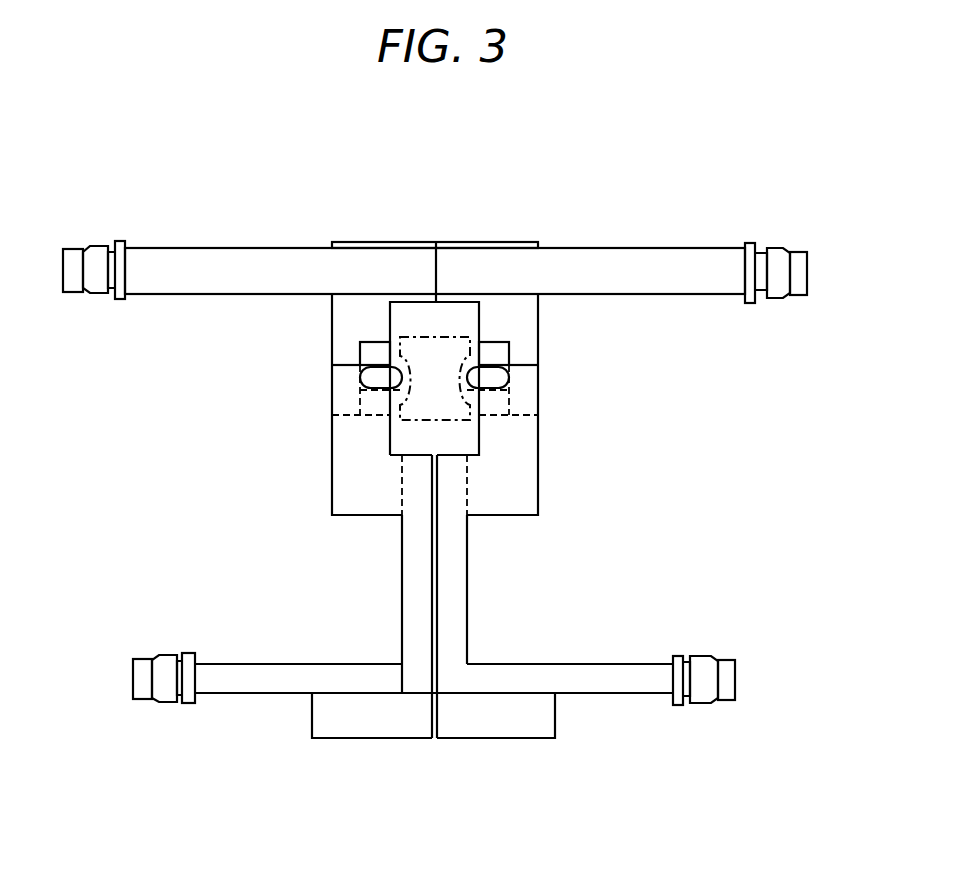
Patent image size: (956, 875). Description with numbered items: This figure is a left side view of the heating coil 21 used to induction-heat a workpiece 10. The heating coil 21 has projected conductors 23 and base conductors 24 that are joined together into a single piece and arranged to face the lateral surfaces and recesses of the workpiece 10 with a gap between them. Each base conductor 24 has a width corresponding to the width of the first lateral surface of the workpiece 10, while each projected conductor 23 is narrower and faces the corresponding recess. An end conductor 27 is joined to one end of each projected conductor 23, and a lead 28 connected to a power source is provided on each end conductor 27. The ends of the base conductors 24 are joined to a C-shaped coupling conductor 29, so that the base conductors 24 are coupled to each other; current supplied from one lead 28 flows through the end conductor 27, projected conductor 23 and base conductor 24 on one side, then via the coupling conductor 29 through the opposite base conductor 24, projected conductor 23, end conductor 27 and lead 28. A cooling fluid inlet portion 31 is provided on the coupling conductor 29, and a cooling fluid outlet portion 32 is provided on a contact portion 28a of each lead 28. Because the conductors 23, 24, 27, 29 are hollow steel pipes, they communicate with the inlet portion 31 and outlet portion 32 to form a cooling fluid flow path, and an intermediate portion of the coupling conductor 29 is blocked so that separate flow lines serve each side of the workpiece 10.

The heating coil 21 is at (567, 195).
The workpiece 10 is at (456, 337).
The projected conductor 23 is at (392, 402).
The base conductor 24 is at (360, 352).
The end conductor 27 is at (539, 473).
The lead 28 is at (467, 583).
The contact portion 28a is at (492, 740).
The coupling conductor 29 is at (332, 327).
The cooling fluid inlet portion 31 is at (678, 247).
The cooling fluid outlet portion 32 is at (620, 662).